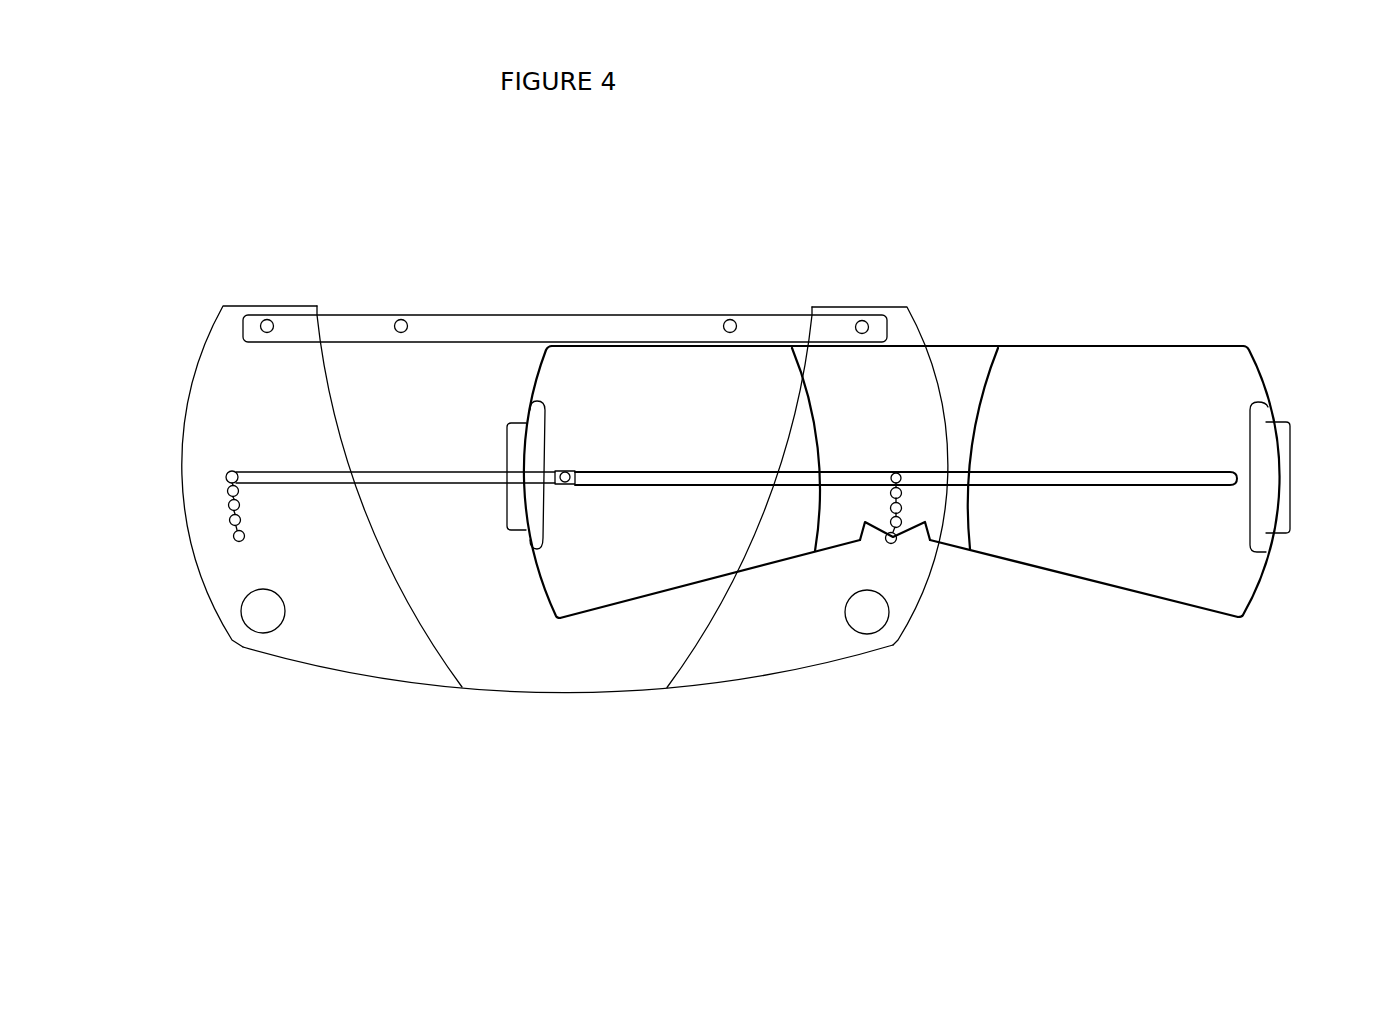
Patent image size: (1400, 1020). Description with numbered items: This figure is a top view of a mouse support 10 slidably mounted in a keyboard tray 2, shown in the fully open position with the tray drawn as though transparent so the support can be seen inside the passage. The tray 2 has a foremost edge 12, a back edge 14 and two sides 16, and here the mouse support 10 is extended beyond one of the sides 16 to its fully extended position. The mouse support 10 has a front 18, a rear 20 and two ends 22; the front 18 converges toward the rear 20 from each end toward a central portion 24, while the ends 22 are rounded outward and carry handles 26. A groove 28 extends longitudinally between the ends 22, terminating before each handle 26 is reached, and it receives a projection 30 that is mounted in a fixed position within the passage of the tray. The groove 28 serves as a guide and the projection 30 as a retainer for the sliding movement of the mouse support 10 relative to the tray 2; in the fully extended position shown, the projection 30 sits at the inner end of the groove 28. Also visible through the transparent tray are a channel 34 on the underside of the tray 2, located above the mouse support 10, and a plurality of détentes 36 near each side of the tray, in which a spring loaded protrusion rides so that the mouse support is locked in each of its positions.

The keyboard tray 2 is at (768, 327).
The mouse support 10 is at (1237, 373).
The foremost edge 12 is at (818, 666).
The back edge 14 is at (702, 315).
The sides 16 is at (213, 328).
The front 18 is at (613, 608).
The rear 20 is at (1188, 345).
The ends 22 is at (542, 597).
The central portion 24 is at (893, 532).
The handles 26 is at (1257, 412).
The groove 28 is at (585, 478).
The projection 30 is at (566, 471).
The channel 34 is at (430, 477).
The détentes 36 is at (900, 482).